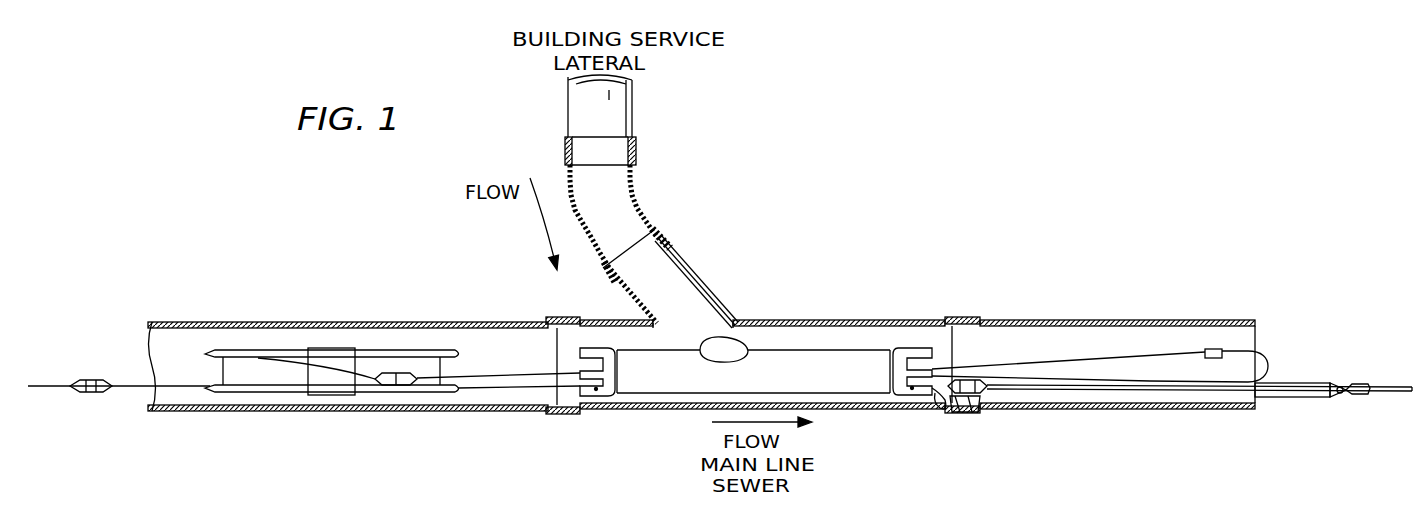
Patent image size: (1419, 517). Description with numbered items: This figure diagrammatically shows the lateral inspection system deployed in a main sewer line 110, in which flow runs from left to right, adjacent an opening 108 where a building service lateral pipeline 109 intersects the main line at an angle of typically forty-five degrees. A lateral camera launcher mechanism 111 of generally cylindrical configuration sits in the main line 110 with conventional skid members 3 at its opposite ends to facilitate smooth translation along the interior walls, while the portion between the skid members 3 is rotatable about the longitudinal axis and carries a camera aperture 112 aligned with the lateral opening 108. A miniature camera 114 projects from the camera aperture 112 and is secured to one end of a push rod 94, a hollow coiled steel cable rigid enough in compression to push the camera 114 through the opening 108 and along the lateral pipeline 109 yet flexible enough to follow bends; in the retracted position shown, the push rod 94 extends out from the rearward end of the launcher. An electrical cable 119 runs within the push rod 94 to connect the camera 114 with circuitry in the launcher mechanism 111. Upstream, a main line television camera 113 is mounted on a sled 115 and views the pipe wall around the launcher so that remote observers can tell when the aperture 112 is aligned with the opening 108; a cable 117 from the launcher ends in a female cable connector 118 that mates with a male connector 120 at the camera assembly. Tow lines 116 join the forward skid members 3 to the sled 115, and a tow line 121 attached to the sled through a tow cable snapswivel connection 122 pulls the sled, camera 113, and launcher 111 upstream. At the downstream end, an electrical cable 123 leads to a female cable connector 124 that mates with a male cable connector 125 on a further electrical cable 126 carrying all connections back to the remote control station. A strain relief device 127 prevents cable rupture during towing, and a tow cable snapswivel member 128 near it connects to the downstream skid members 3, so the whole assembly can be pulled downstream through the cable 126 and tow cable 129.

The skid members 3 is at (598, 372).
The push rod 94 is at (1102, 353).
The opening 108 is at (692, 303).
The building service lateral pipeline 109 is at (680, 254).
The main sewer line 110 is at (208, 322).
The lateral camera launcher mechanism 111 is at (683, 394).
The camera aperture 112 is at (745, 336).
The main line television camera 113 is at (327, 396).
The miniature camera 114 is at (740, 336).
The sled 115 is at (248, 351).
The tow lines 116 is at (493, 392).
The cable 117 is at (492, 372).
The female cable connector 118 is at (410, 374).
The electrical cable 119 is at (1262, 370).
The male connector 120 is at (382, 372).
The tow line 121 is at (40, 386).
The tow cable snapswivel connection 122 is at (93, 393).
The electrical cable 123 is at (938, 400).
The female cable connector 124 is at (963, 406).
The male cable connector 125 is at (975, 394).
The electrical cable 126 is at (1082, 390).
The strain relief device 127 is at (1352, 400).
The tow cable snapswivel member 128 is at (1335, 397).
The tow cable 129 is at (1275, 408).